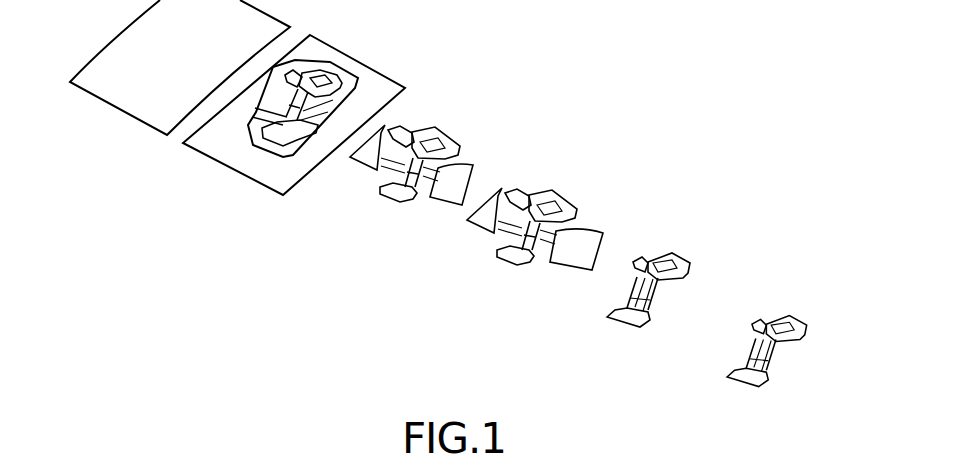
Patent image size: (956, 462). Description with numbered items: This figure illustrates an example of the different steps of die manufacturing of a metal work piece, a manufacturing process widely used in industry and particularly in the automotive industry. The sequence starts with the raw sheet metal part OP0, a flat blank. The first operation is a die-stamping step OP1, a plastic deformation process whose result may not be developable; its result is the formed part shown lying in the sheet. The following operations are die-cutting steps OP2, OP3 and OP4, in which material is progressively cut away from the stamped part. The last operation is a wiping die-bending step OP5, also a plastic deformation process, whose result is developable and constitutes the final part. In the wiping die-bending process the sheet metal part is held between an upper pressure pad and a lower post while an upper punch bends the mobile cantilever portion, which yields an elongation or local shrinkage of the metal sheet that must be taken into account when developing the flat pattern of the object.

The raw sheet metal part OP0 is at (180, 73).
The die-stamping step OP1 is at (294, 120).
The die-cutting step OP2 is at (411, 183).
The die-cutting step OP3 is at (532, 245).
The die-cutting step OP4 is at (632, 305).
The wiping die-bending step OP5 is at (752, 368).